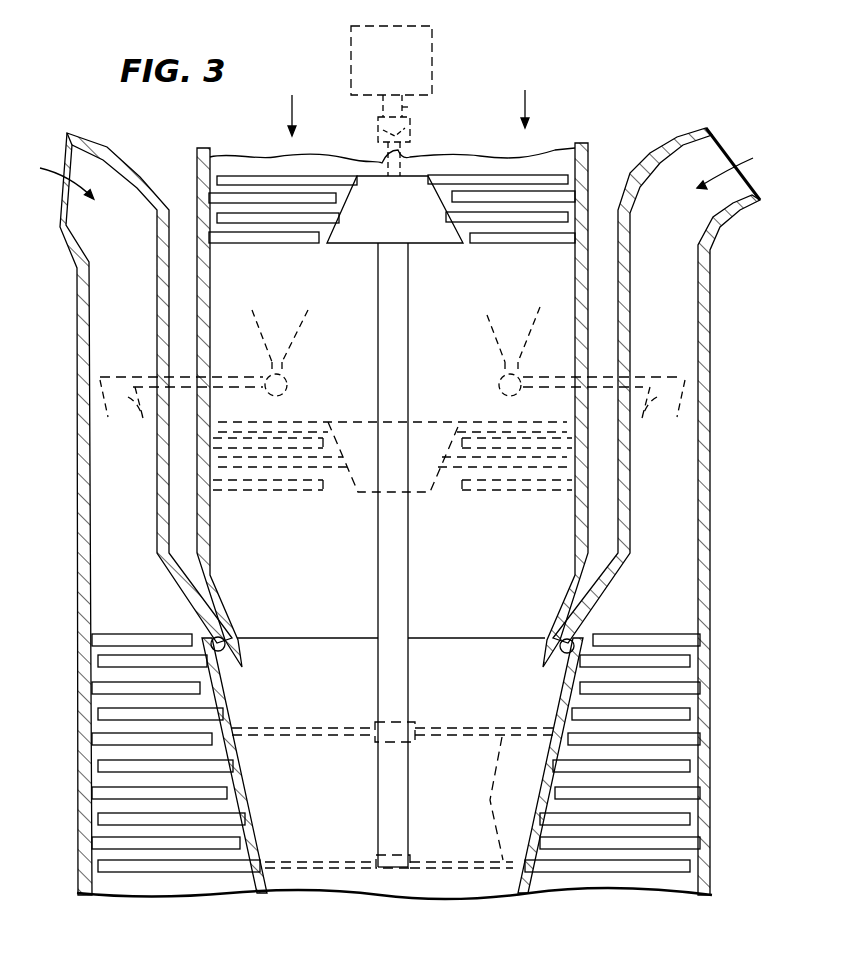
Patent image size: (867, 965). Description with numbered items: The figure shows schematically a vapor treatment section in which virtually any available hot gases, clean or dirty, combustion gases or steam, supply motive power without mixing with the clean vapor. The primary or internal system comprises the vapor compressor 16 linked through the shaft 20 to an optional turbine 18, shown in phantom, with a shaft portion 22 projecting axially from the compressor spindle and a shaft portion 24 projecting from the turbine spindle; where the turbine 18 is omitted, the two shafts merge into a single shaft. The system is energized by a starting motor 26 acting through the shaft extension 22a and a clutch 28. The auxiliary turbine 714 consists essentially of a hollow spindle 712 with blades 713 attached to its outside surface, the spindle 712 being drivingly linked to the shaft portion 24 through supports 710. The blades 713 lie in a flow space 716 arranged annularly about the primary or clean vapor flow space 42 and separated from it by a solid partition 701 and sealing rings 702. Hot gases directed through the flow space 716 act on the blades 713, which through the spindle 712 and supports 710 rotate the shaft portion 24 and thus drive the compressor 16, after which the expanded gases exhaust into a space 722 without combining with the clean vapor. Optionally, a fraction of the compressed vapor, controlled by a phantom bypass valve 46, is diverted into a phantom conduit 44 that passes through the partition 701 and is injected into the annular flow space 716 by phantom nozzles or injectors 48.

The vapor compressor 16 is at (552, 217).
The turbine 18 is at (502, 492).
The shaft 20 is at (404, 300).
The shaft portion 22 is at (382, 157).
The shaft extension 22a is at (412, 107).
The shaft portion 24 is at (382, 534).
The starting motor 26 is at (433, 34).
The clutch 28 is at (410, 137).
The primary or clean vapor flow space 42 is at (354, 355).
The conduit 44 is at (258, 372).
The bypass valve 46 is at (288, 392).
The nozzles or injectors 48 is at (392, 416).
The solid partition 701 is at (577, 548).
The sealing rings 702 is at (216, 638).
The supports 710 is at (491, 814).
The hollow spindle 712 is at (233, 713).
The blades 713 is at (193, 662).
The auxiliary turbine 714 is at (667, 782).
The flow space 716 is at (140, 513).
The space 722 is at (262, 882).